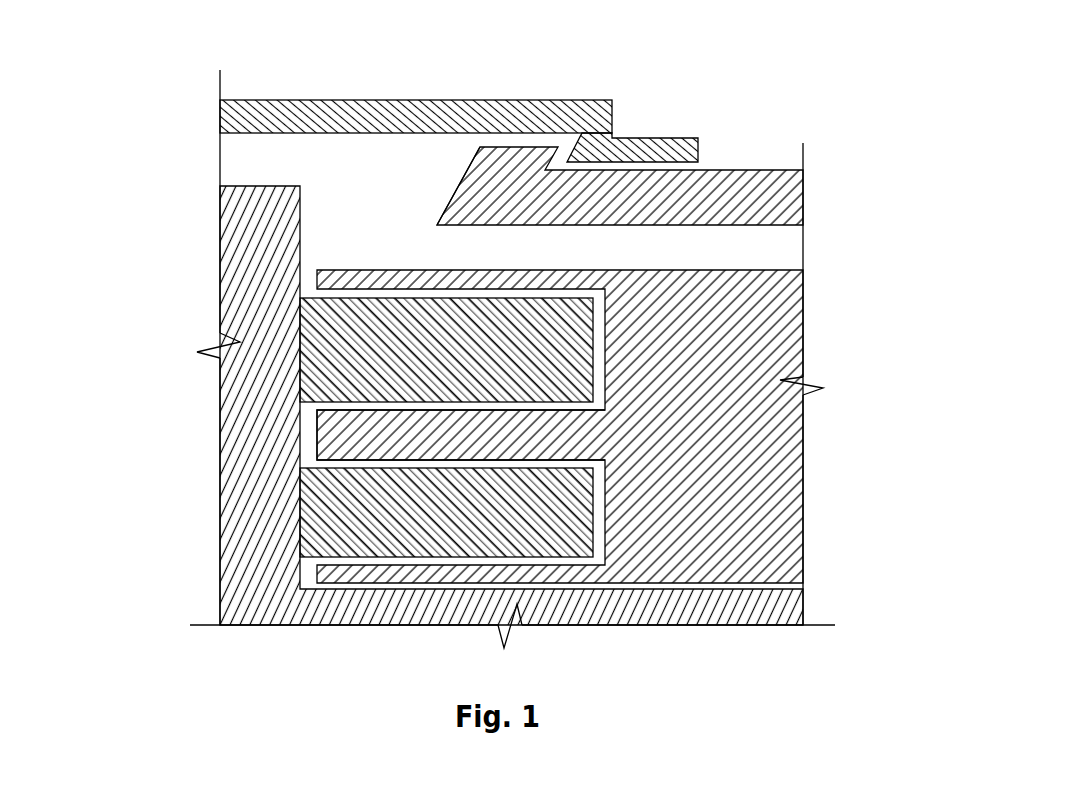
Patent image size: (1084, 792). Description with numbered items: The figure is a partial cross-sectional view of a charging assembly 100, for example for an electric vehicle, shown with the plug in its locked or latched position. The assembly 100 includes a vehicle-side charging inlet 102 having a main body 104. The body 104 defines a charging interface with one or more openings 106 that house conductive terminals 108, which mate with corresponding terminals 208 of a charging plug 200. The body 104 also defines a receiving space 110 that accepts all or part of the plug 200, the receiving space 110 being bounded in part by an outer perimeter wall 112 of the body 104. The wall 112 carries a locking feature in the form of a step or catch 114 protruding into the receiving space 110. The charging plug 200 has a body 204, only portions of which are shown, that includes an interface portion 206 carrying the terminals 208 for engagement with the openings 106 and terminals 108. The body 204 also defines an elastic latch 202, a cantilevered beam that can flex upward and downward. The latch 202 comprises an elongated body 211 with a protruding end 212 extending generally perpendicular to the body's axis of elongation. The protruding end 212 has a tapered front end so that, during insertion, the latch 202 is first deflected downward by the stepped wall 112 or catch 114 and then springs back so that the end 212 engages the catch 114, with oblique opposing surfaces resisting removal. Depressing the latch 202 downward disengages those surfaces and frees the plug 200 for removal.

The charging assembly 100 is at (501, 326).
The charging inlet 102 is at (248, 325).
The main body 104 is at (327, 134).
The openings 106 is at (303, 410).
The conductive terminals 108 is at (312, 463).
The receiving space 110 is at (262, 162).
The perimeter wall 112 is at (240, 107).
The catch 114 is at (603, 138).
The charging plug 200 is at (638, 426).
The elastic latch 202 is at (777, 188).
The plug body 204 is at (560, 426).
The interface portion 206 is at (638, 473).
The plug terminals 208 is at (465, 437).
The elongated body 211 is at (640, 193).
The protruding end 212 is at (481, 168).